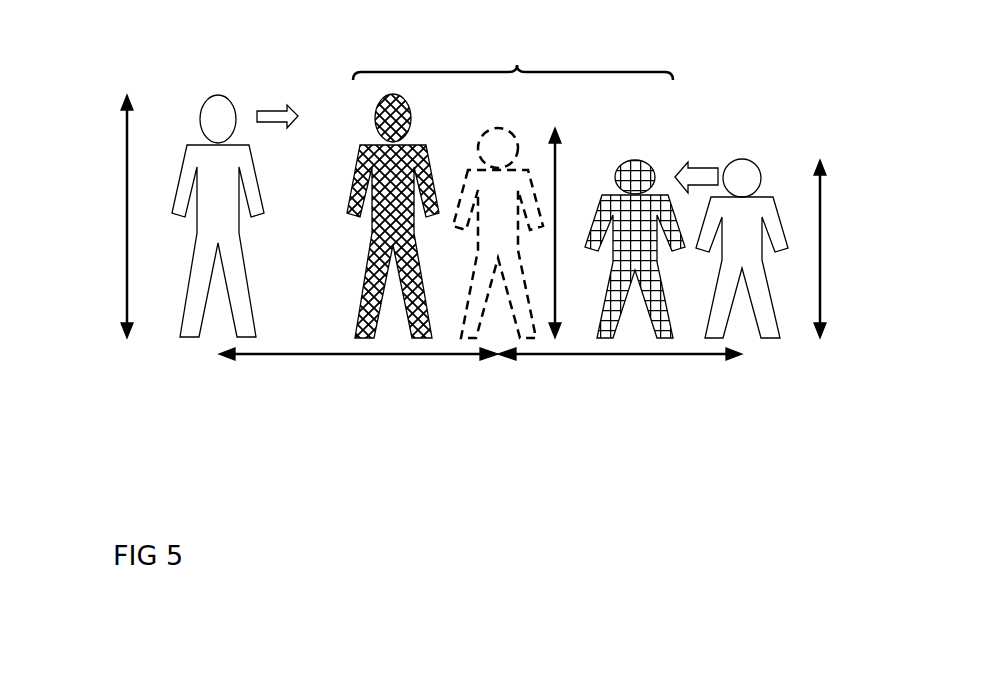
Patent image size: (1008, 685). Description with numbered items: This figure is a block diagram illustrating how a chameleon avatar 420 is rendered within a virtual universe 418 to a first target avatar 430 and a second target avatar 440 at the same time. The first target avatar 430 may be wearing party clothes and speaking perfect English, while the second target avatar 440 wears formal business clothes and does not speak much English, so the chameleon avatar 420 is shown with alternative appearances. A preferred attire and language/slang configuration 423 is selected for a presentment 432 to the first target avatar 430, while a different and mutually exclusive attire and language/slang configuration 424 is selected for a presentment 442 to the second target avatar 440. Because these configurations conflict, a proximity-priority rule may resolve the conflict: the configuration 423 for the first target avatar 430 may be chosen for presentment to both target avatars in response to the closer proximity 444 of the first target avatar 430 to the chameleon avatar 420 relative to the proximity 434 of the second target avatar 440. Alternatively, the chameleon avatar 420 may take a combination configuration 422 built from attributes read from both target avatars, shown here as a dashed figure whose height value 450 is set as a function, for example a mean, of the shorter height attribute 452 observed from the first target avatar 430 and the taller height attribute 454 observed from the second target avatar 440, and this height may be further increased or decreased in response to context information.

The virtual universe 418 is at (128, 383).
The chameleon avatar 420 is at (517, 50).
The combination configuration 422 is at (498, 128).
The chameleon avatar attire and language/slang configuration 423 is at (372, 265).
The chameleon avatar attire and language/slang configuration 424 is at (640, 160).
The first target avatar 430 is at (240, 267).
The presentment 432 is at (282, 110).
The proximity 434 is at (385, 355).
The second target avatar 440 is at (762, 170).
The presentment 442 is at (689, 165).
The closer proximity 444 is at (660, 355).
The height value 450 is at (555, 163).
The shorter height attribute 452 is at (820, 225).
The taller height attribute 454 is at (127, 178).